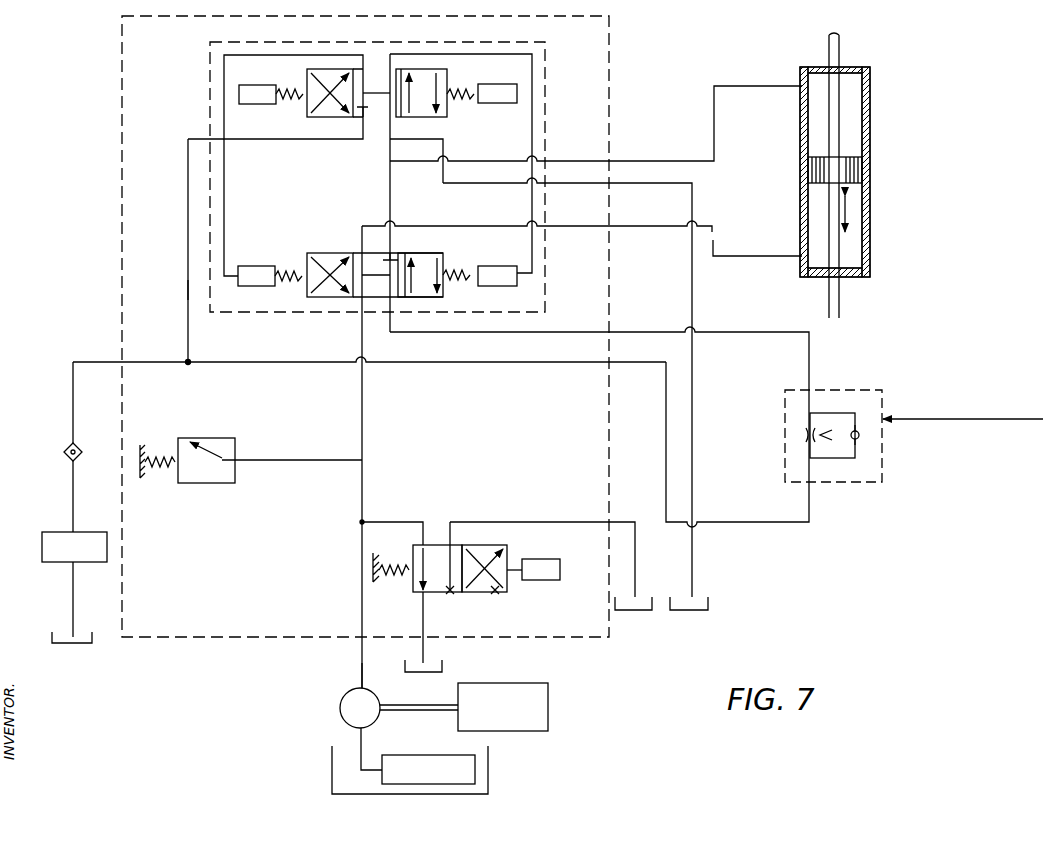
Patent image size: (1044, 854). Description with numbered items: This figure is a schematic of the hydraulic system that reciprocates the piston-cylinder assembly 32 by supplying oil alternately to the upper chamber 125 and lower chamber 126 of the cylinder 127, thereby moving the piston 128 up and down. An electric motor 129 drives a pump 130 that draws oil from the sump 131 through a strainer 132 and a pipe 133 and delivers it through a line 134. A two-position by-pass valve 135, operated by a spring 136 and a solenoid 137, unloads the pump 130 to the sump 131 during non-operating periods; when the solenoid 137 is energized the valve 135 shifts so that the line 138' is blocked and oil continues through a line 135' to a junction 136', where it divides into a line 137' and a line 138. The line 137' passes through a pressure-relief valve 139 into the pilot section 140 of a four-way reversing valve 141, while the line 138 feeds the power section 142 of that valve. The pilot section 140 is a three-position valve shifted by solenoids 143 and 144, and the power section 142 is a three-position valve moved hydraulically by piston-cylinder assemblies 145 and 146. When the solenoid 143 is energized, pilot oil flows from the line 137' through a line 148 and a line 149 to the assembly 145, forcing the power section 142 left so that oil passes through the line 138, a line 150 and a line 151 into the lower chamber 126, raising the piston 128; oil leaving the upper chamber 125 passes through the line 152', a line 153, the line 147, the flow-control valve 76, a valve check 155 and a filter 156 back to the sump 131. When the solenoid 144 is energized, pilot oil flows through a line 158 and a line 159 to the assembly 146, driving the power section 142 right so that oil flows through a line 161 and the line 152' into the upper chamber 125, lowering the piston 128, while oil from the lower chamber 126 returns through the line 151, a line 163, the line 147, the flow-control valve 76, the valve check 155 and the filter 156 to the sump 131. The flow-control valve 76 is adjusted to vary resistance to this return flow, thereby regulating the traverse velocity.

The piston-cylinder assembly 32 is at (875, 175).
The flow-control valve 76 is at (841, 458).
The upper chamber 125 is at (848, 108).
The lower chamber 126 is at (853, 244).
The cylinder 127 is at (862, 270).
The piston 128 is at (848, 172).
The electric motor 129 is at (549, 713).
The pump 130 is at (341, 712).
The sump 131 is at (60, 655).
The strainer 132 is at (452, 755).
The pipe 133 is at (363, 750).
The line 134 is at (362, 668).
The two-position by-pass valve 135 is at (483, 588).
The line 135' is at (391, 484).
The spring 136 is at (503, 592).
The junction 136' is at (292, 465).
The solenoid 137 is at (546, 556).
The line 137' is at (163, 293).
The line 138 is at (369, 457).
The line 138' is at (397, 521).
The pressure-relief valve 139 is at (236, 434).
The pilot section 140 is at (211, 96).
The four-way reversing valve 141 is at (185, 184).
The power section 142 is at (183, 256).
The solenoid 143 is at (253, 82).
The solenoid 144 is at (515, 84).
The piston-cylinder assembly 145 is at (251, 266).
The piston-cylinder assembly 146 is at (487, 270).
The line 147 is at (510, 334).
The line 148 is at (412, 100).
The line 149 is at (241, 55).
The line 150 is at (428, 254).
The line 151 is at (500, 212).
The line 152' is at (596, 123).
The line 153 is at (437, 260).
The valve check 155 is at (66, 458).
The filter 156 is at (42, 541).
The line 158 is at (312, 103).
The line 159 is at (472, 42).
The line 161 is at (334, 258).
The line 163 is at (337, 298).